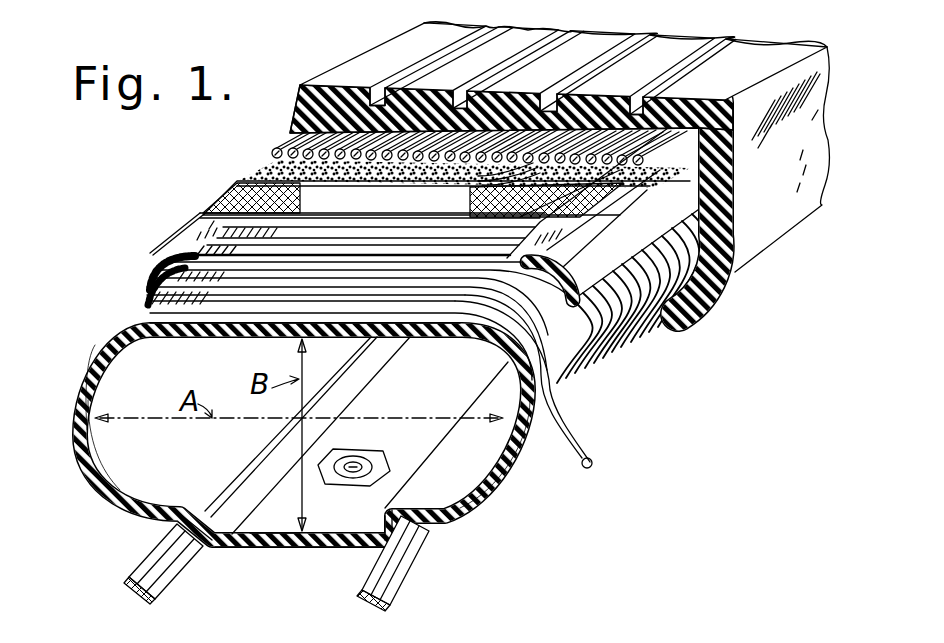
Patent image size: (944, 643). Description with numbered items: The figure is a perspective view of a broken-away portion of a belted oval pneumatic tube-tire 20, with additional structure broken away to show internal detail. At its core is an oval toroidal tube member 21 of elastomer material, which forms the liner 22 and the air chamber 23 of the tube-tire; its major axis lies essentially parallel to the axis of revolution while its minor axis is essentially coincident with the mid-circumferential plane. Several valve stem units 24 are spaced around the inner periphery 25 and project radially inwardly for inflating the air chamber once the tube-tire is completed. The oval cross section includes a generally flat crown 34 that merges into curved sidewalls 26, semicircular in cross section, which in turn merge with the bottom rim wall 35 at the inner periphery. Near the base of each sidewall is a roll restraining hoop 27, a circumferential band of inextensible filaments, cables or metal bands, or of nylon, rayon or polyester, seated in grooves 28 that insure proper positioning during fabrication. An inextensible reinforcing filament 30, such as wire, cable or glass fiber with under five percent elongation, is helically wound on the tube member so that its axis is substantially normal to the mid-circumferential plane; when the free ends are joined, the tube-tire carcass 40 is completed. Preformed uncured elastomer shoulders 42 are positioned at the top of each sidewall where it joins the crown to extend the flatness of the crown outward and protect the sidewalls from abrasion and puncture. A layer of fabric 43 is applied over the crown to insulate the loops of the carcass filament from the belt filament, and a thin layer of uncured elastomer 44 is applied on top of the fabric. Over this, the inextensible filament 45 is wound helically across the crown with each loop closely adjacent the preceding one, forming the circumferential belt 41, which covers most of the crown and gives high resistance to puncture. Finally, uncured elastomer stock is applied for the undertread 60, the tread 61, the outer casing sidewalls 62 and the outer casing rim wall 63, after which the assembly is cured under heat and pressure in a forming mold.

The oval pneumatic tube-tire 20 is at (118, 298).
The oval toroidal tube member 21 is at (70, 441).
The liner 22 is at (96, 428).
The air chamber 23 is at (352, 523).
The valve stem unit 24 is at (356, 452).
The inner periphery 25 is at (343, 545).
The sidewall portion 26 is at (86, 373).
The roll restraining hoop 27 is at (157, 544).
The groove 28 is at (190, 512).
The inextensible reinforcing filament 30 is at (581, 448).
The crown 34 is at (240, 318).
The rim wall 35 is at (253, 550).
The tube-tire carcass 40 is at (628, 386).
The circumferential belt 41 is at (281, 157).
The elastomer shoulder 42 is at (200, 246).
The layer of fabric 43 is at (232, 203).
The thin layer of uncured elastomer 44 is at (355, 180).
The belt filament 45 is at (478, 176).
The undertread 60 is at (297, 112).
The tread 61 is at (377, 58).
The outer casing sidewall 62 is at (793, 171).
The outer casing rim wall 63 is at (663, 330).